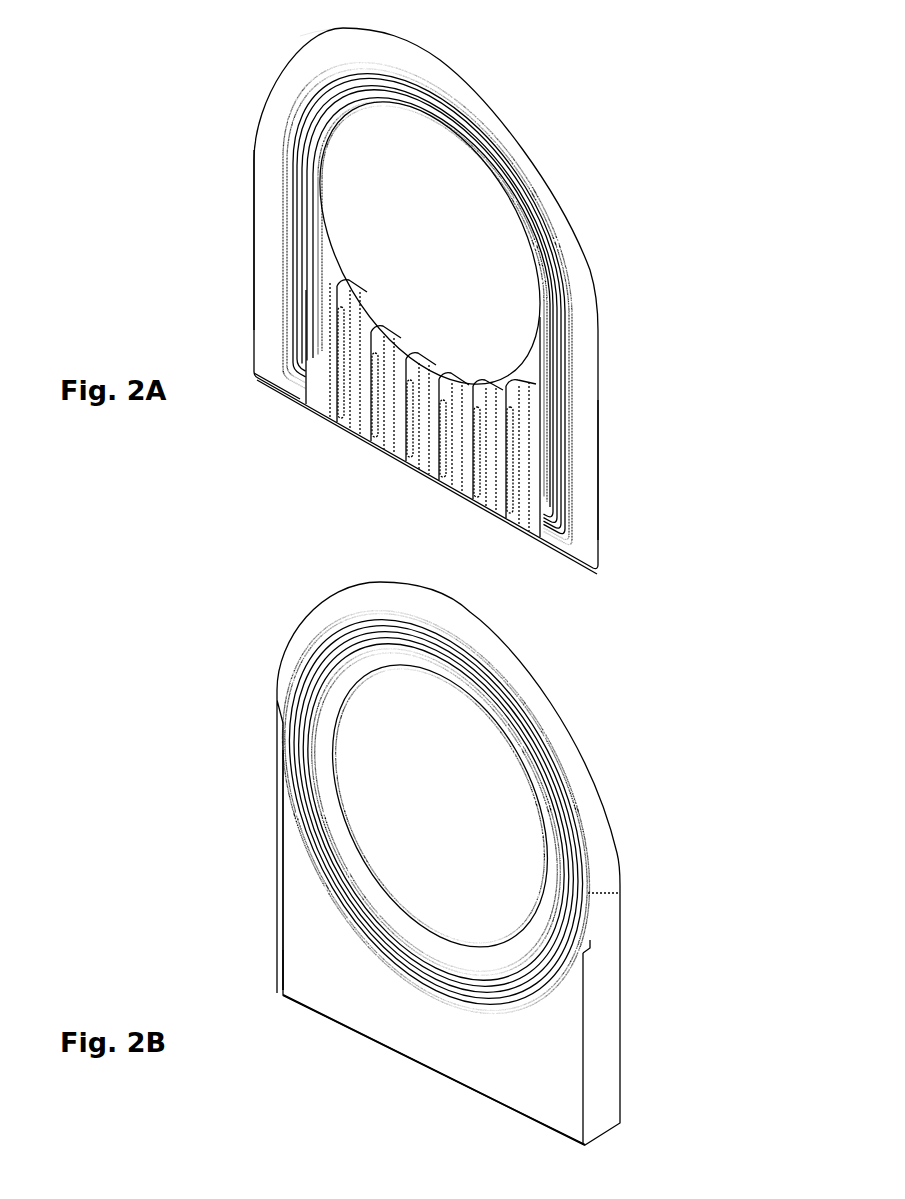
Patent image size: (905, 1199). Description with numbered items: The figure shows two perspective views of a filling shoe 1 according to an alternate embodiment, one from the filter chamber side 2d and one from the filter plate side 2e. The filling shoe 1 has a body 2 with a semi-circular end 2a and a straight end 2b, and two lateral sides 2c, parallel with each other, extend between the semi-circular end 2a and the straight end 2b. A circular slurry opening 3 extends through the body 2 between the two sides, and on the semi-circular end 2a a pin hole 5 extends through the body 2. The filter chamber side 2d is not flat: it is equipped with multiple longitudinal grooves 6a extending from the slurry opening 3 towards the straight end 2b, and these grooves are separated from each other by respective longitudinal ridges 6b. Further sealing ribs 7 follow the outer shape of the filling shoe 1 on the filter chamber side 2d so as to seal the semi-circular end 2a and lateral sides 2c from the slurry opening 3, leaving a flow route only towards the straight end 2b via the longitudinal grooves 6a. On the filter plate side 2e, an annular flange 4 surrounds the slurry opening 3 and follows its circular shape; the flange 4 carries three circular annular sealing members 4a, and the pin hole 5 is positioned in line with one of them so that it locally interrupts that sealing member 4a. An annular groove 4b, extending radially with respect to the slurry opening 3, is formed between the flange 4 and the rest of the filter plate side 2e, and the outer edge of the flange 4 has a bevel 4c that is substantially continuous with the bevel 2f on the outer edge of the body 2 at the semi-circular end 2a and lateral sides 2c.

In FIG. 2A, the filling shoe 1 is at (197, 124).
In FIG. 2B, the filling shoe 1 is at (202, 777).
In FIG. 2A, the body 2 is at (270, 317).
In FIG. 2B, the body 2 is at (448, 863).
In FIG. 2A, the semi-circular end 2a is at (455, 67).
In FIG. 2B, the semi-circular end 2a is at (395, 585).
In FIG. 2A, the straight end 2b is at (345, 432).
In FIG. 2B, the straight end 2b is at (403, 1057).
In FIG. 2A, the lateral sides 2c is at (254, 262).
In FIG. 2B, the lateral sides 2c is at (278, 918).
In FIG. 2A, the filter chamber side 2d is at (587, 482).
In FIG. 2B, the filter plate side 2e is at (300, 970).
In FIG. 2B, the bevel 2f is at (303, 632).
In FIG. 2A, the slurry opening 3 is at (490, 230).
In FIG. 2B, the slurry opening 3 is at (500, 862).
In FIG. 2B, the annular flange 4 is at (588, 948).
In FIG. 2B, the annular sealing members 4a is at (292, 731).
In FIG. 2B, the annular groove 4b is at (562, 778).
In FIG. 2B, the bevel 4c is at (540, 748).
In FIG. 2A, the pin hole 5 is at (427, 93).
In FIG. 2B, the pin hole 5 is at (430, 656).
In FIG. 2A, the longitudinal grooves 6a is at (498, 480).
In FIG. 2A, the longitudinal ridges 6b is at (480, 500).
In FIG. 2A, the sealing ribs 7 is at (567, 283).